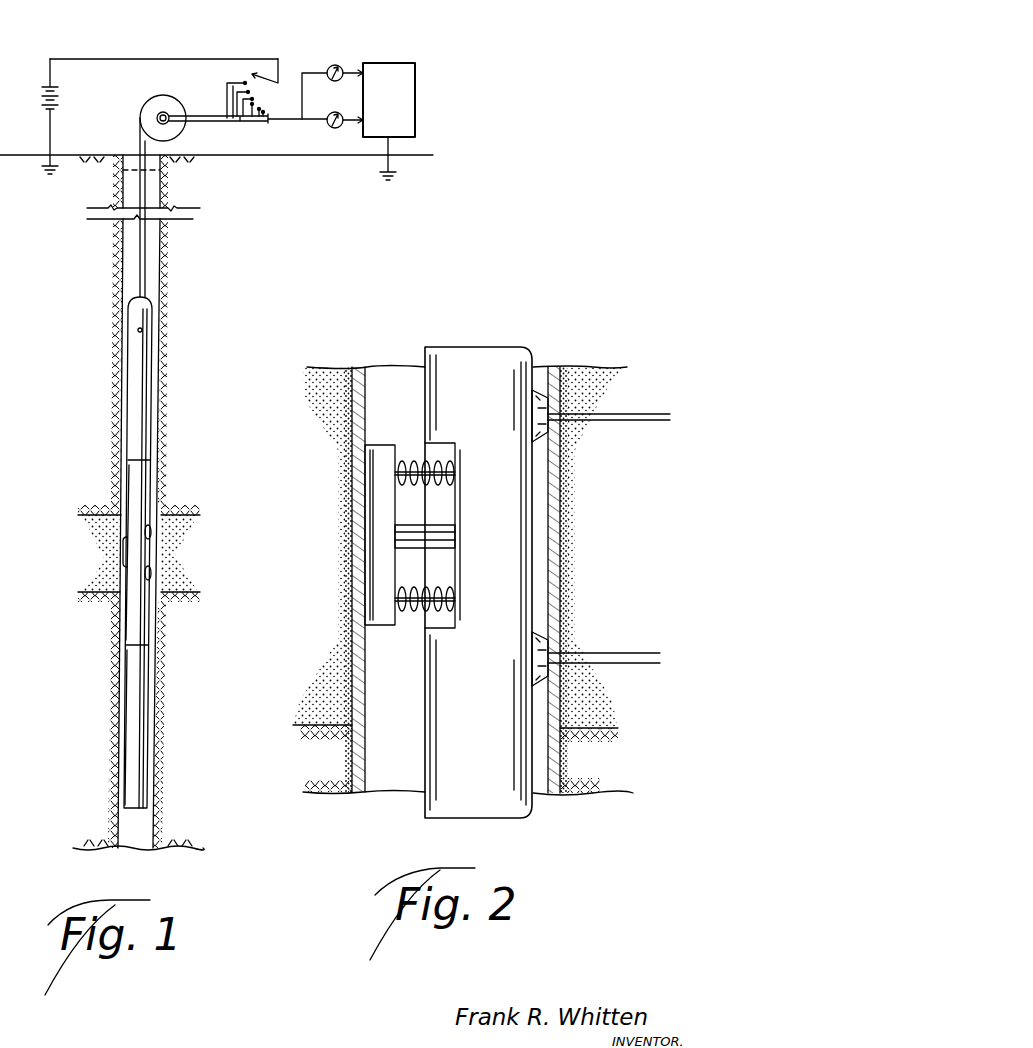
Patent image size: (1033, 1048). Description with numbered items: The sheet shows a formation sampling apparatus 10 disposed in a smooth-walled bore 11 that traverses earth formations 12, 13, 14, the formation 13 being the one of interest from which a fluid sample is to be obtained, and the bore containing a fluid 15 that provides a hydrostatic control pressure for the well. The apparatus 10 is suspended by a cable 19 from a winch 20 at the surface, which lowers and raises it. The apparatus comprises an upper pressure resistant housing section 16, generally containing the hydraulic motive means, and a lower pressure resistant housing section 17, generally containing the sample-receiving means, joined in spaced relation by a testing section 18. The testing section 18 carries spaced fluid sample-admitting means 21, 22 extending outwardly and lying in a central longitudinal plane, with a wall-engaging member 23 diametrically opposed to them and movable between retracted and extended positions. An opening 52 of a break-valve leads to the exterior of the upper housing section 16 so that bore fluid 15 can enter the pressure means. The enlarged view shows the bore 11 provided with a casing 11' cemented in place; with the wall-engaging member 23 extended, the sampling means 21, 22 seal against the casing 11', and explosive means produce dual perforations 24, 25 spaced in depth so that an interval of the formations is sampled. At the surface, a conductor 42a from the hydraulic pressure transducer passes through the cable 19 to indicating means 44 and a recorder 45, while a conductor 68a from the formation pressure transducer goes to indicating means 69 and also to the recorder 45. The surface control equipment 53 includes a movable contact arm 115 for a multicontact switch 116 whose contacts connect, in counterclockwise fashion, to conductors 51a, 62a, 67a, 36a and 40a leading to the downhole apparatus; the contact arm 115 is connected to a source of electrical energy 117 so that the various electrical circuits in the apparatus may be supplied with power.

In FIG. 1, the formation sampling apparatus 10 is at (148, 630).
In FIG. 1, the bore 11 is at (165, 292).
In FIG. 2, the bore 11 is at (456, 580).
In FIG. 2, the casing 11' is at (456, 580).
In FIG. 1, the earth formation 12 is at (163, 398).
In FIG. 1, the earth formation 13 is at (163, 563).
In FIG. 2, the earth formation 13 is at (326, 670).
In FIG. 1, the earth formation 14 is at (158, 741).
In FIG. 2, the earth formation 14 is at (328, 768).
In FIG. 1, the fluid 15 is at (153, 273).
In FIG. 1, the upper pressure resistant housing section 16 is at (143, 348).
In FIG. 1, the lower pressure resistant housing section 17 is at (138, 697).
In FIG. 1, the testing section 18 is at (150, 468).
In FIG. 2, the testing section 18 is at (476, 548).
In FIG. 1, the cable 19 is at (143, 237).
In FIG. 1, the winch 20 is at (140, 110).
In FIG. 1, the fluid sample-admitting means 21 is at (151, 532).
In FIG. 2, the fluid sample-admitting means 21 is at (532, 413).
In FIG. 1, the fluid sample-admitting means 22 is at (151, 573).
In FIG. 2, the fluid sample-admitting means 22 is at (523, 663).
In FIG. 1, the wall-engaging member 23 is at (120, 555).
In FIG. 2, the wall-engaging member 23 is at (370, 495).
In FIG. 2, the perforation 24 is at (633, 421).
In FIG. 2, the perforation 25 is at (632, 664).
In FIG. 1, the conductor 36a is at (258, 113).
In FIG. 1, the conductor 40a is at (270, 119).
In FIG. 1, the conductor 42a is at (302, 72).
In FIG. 1, the indicating means 44 is at (336, 64).
In FIG. 1, the recorder 45 is at (415, 75).
In FIG. 1, the conductor 51a is at (234, 82).
In FIG. 1, the opening 52 is at (138, 330).
In FIG. 1, the surface control equipment 53 is at (226, 153).
In FIG. 1, the conductor 62a is at (227, 82).
In FIG. 1, the conductor 67a is at (242, 109).
In FIG. 1, the conductor 68a is at (313, 121).
In FIG. 1, the indicating means 69 is at (335, 127).
In FIG. 1, the movable contact arm 115 is at (270, 61).
In FIG. 1, the multicontact switch 116 is at (217, 95).
In FIG. 1, the source of electrical energy 117 is at (62, 88).